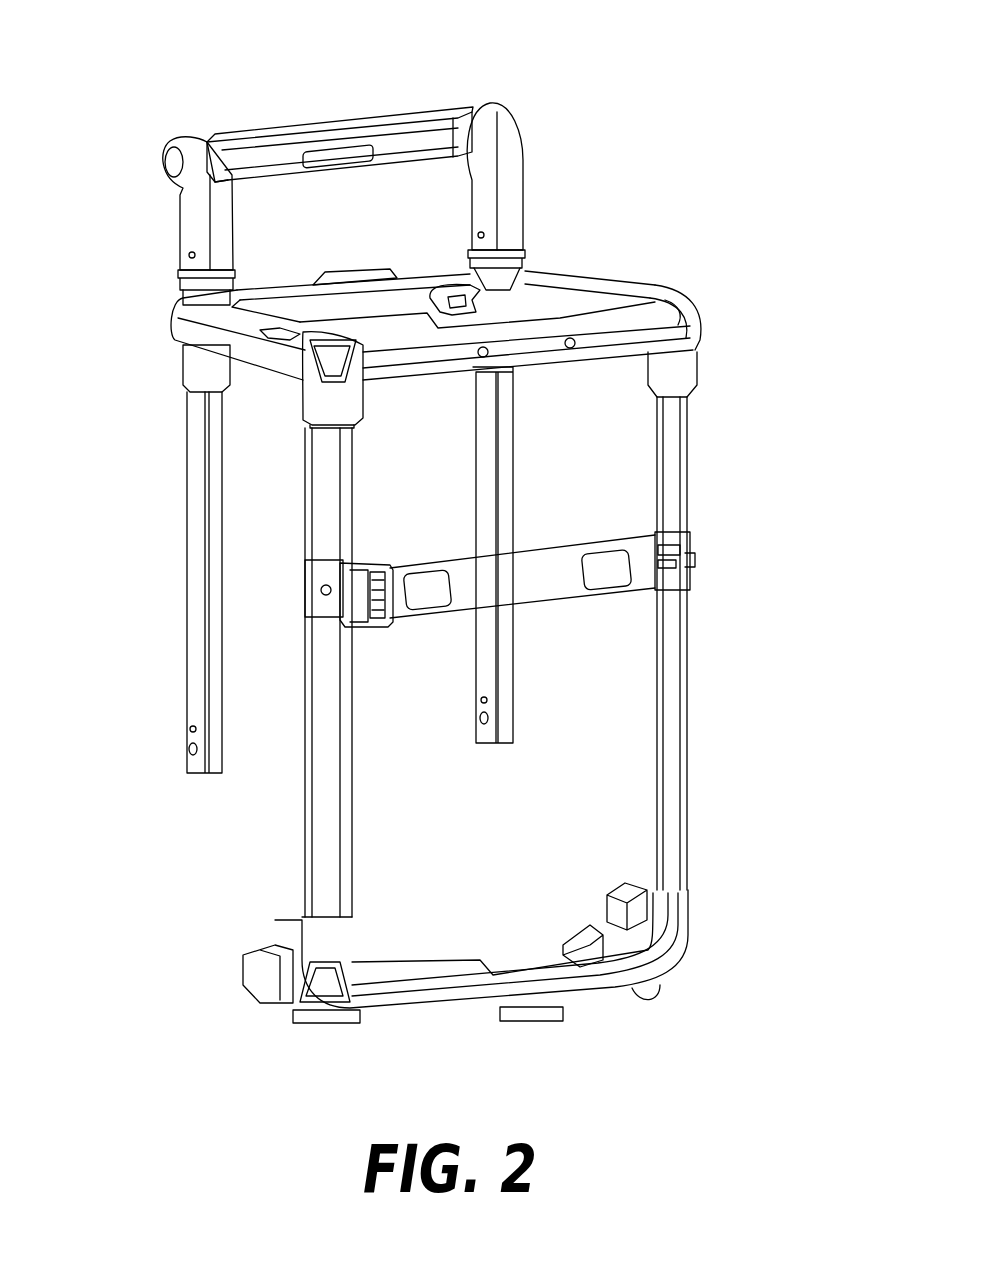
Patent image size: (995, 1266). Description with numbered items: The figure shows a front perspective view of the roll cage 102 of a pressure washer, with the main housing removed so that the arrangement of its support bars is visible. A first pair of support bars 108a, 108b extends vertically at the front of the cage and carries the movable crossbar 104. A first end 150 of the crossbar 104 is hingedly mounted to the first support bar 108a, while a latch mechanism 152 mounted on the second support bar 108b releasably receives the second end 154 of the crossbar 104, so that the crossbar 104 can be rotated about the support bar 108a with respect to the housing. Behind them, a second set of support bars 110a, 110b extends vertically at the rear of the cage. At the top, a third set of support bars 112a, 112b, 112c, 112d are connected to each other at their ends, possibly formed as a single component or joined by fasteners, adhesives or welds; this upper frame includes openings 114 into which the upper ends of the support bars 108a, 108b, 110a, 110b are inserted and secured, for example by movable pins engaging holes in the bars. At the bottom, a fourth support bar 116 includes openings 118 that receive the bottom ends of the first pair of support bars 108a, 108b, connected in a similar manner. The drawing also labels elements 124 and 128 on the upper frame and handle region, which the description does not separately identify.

The roll cage 102 is at (366, 26).
The crossbar 104 is at (612, 592).
The first support bar 108a is at (688, 470).
The second support bar 108b is at (317, 843).
The support bar 110a is at (195, 698).
The support bar 110b is at (503, 455).
The support bar 112a is at (237, 352).
The support bar 112b is at (578, 278).
The support bar 112c is at (603, 327).
The support bar 112d is at (458, 282).
The openings 114 is at (340, 432).
The fourth support bar 116 is at (587, 993).
The openings 118 is at (677, 888).
The handle post base 124 is at (197, 291).
The handle bar 128 is at (242, 138).
The first end 150 is at (695, 557).
The latch mechanism 152 is at (340, 593).
The second end 154 is at (367, 627).